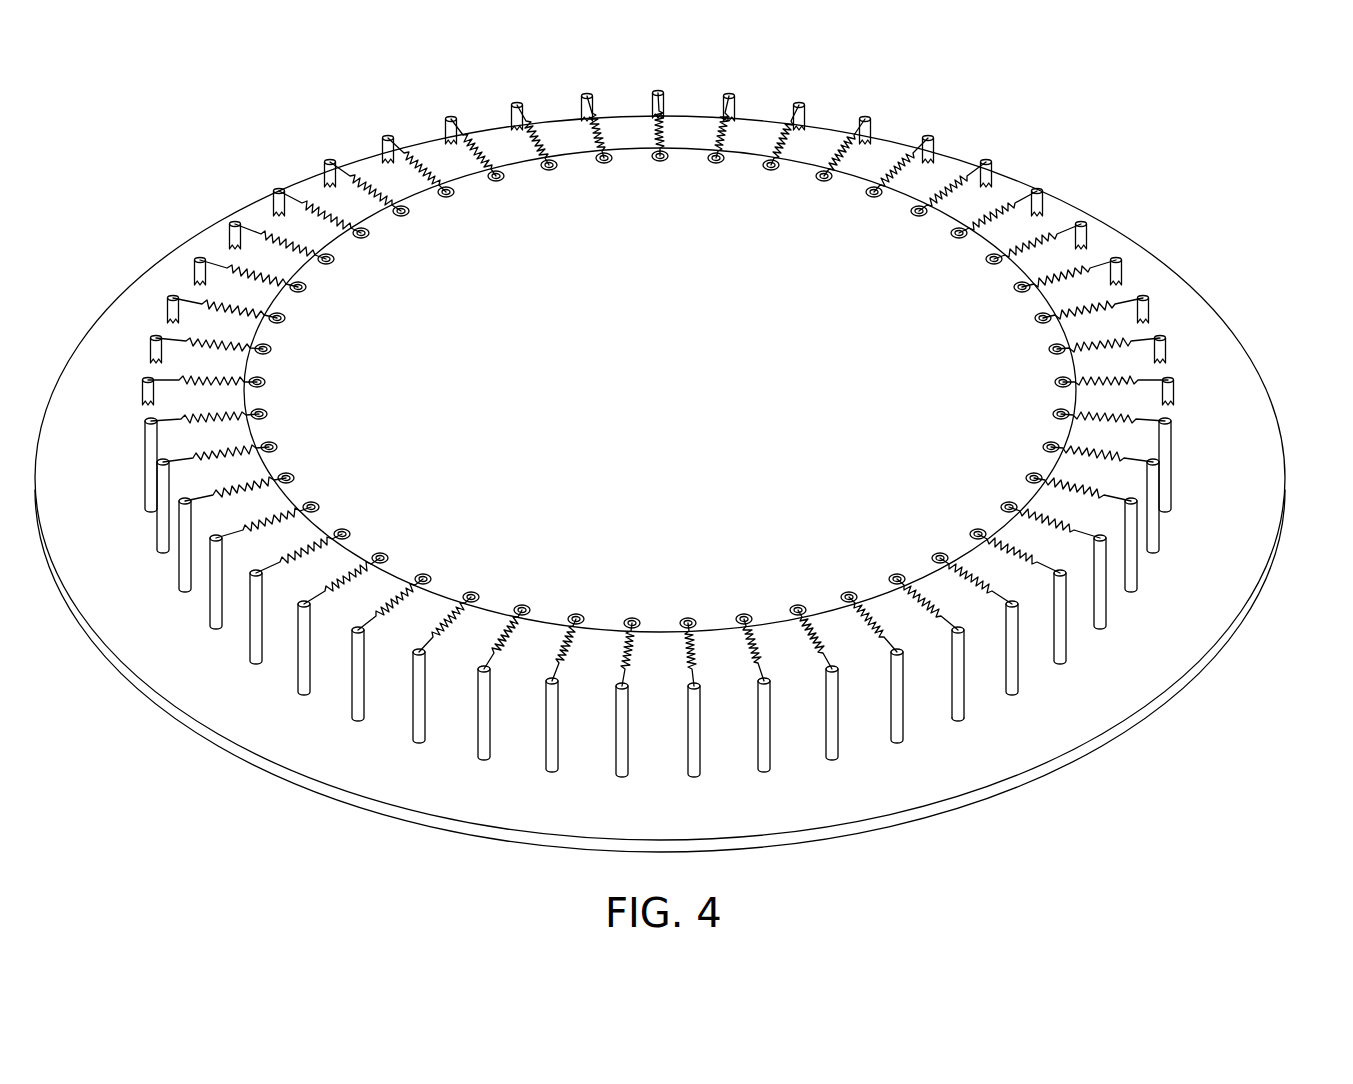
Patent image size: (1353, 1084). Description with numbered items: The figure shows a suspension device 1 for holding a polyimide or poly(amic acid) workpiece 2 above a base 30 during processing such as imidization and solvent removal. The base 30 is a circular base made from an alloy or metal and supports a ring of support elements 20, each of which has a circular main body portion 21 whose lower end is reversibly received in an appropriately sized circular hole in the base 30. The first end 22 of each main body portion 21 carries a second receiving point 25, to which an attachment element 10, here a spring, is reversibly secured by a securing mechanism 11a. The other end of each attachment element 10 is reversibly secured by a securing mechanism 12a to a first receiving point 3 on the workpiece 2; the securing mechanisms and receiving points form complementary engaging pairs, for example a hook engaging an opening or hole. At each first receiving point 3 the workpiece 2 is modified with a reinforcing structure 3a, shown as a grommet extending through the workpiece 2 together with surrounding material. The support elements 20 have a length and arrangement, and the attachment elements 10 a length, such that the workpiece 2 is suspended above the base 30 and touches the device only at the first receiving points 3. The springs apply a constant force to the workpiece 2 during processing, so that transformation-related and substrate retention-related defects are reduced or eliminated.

The suspension device 1 is at (1211, 181).
The workpiece 2 is at (843, 217).
The first receiving point 3 is at (1058, 430).
The reinforcing structure 3a is at (1078, 455).
The securing mechanism 12a is at (1028, 513).
The attachment element 10 is at (1045, 542).
The securing mechanism 11a is at (1063, 565).
The second receiving point 25 is at (1018, 600).
The first end 22 is at (965, 638).
The support element 20 is at (978, 716).
The main body portion 21 is at (957, 714).
The base 30 is at (817, 793).